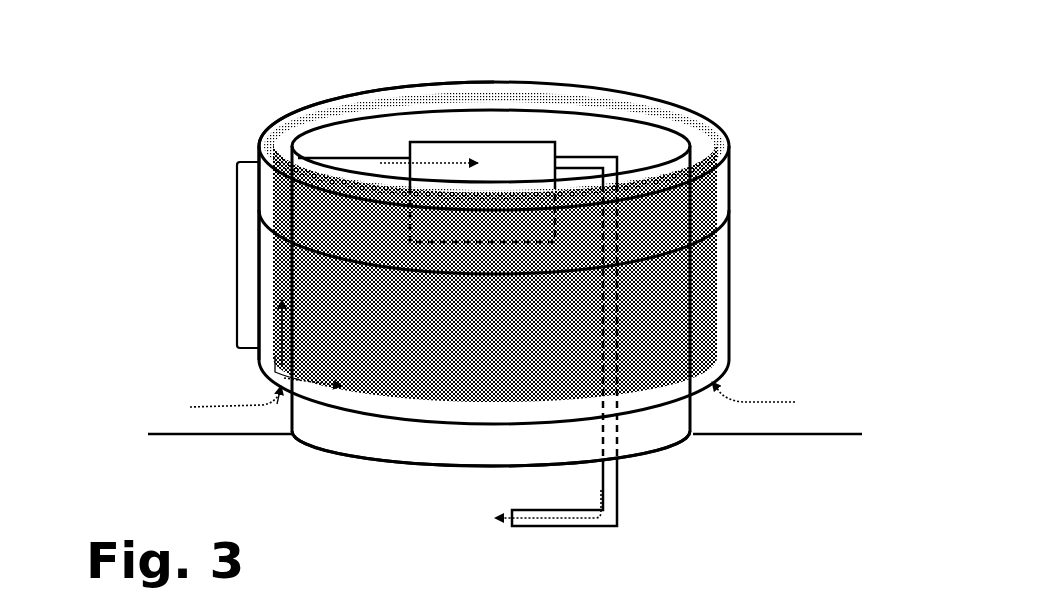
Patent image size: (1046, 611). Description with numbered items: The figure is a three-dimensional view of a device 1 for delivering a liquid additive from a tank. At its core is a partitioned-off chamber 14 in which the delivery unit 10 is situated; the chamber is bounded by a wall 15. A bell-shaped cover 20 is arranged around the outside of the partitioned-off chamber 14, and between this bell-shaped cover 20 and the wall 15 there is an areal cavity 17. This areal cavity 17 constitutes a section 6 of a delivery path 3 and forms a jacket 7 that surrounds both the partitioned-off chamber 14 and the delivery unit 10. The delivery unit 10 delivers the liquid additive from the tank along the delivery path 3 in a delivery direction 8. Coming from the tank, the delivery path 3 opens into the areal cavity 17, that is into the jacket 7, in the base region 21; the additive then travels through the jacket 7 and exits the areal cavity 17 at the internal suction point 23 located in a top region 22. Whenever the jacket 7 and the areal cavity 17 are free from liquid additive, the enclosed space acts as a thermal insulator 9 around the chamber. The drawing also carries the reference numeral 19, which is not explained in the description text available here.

The device 1 is at (770, 76).
The delivery path 3 is at (450, 163).
The section 6 is at (239, 259).
The jacket 7 is at (703, 337).
The delivery direction 8 is at (488, 165).
The thermal insulator 9 is at (712, 146).
The delivery unit 10 is at (555, 142).
The partitioned-off chamber 14 is at (693, 423).
The wall 15 is at (693, 430).
The areal cavity 17 is at (275, 356).
The rim 19 is at (316, 108).
The bell-shaped cover 20 is at (263, 132).
The base region 21 is at (277, 370).
The top region 22 is at (278, 160).
The internal suction point 23 is at (293, 160).